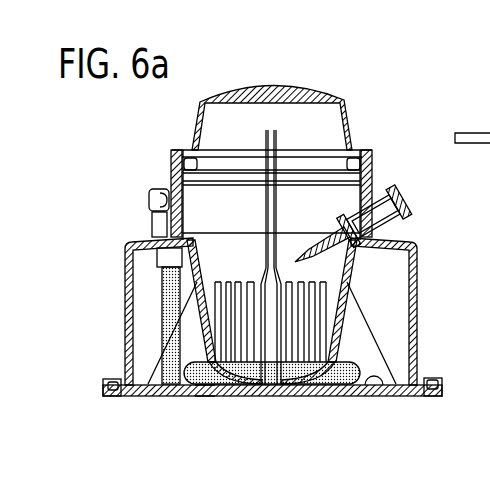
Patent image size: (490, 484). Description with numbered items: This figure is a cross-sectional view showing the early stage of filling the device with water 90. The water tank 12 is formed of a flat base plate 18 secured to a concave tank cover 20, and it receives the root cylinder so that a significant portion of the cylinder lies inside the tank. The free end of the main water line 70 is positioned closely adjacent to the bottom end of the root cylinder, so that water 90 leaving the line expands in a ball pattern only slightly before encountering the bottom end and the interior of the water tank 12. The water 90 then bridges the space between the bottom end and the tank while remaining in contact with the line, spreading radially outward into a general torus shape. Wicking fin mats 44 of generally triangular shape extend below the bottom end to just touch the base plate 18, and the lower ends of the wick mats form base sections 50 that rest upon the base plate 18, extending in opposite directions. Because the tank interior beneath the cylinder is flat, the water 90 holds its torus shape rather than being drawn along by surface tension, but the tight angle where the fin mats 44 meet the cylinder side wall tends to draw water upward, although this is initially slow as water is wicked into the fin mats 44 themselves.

The water tank 12 is at (127, 274).
The tank cover 20 is at (418, 303).
The main water line 70 is at (168, 294).
The fin mats 44 is at (178, 348).
The water 90 is at (205, 396).
The base plate 18 is at (292, 396).
The base sections 50 is at (380, 396).